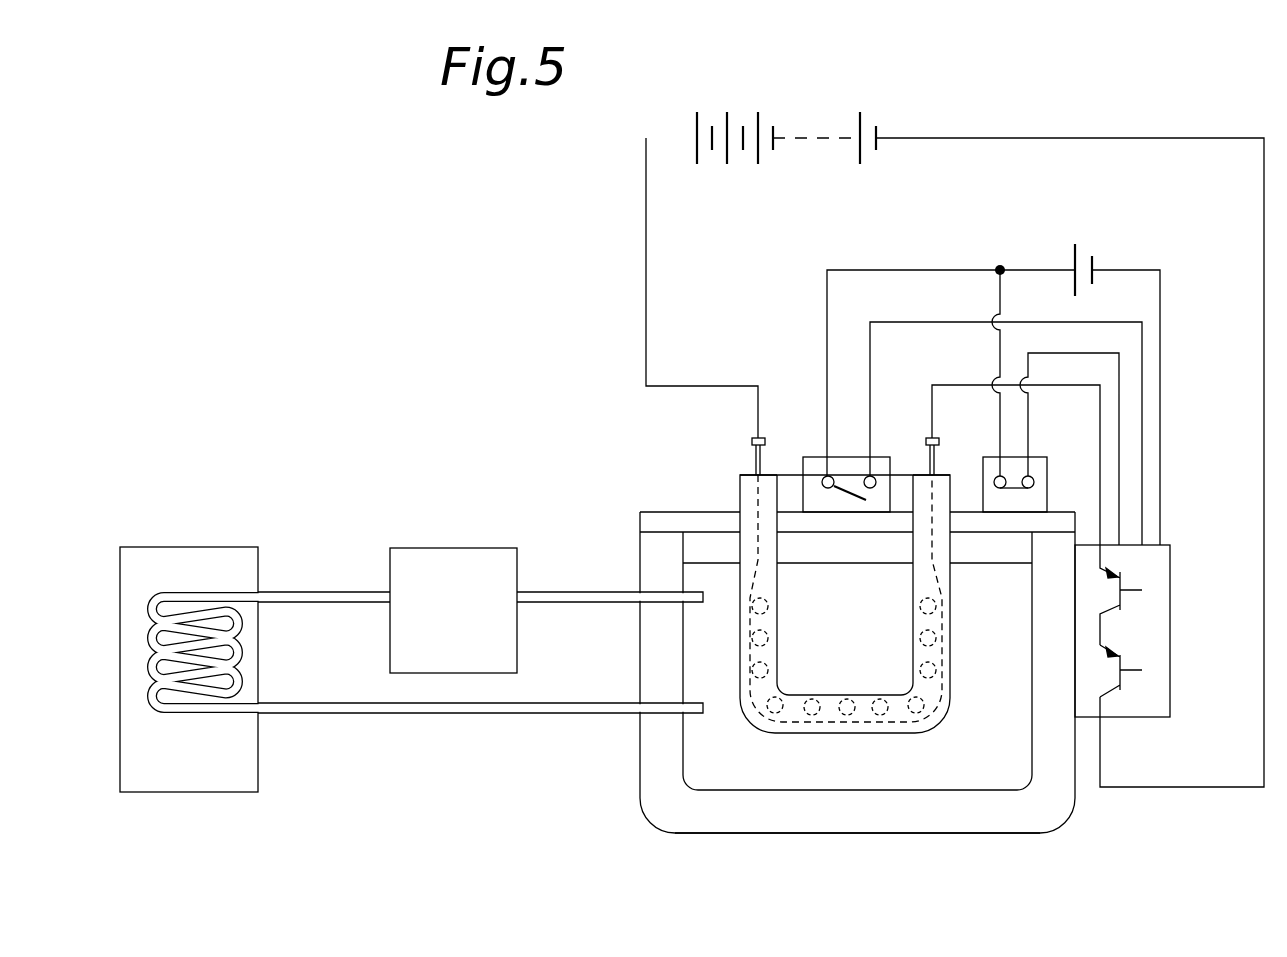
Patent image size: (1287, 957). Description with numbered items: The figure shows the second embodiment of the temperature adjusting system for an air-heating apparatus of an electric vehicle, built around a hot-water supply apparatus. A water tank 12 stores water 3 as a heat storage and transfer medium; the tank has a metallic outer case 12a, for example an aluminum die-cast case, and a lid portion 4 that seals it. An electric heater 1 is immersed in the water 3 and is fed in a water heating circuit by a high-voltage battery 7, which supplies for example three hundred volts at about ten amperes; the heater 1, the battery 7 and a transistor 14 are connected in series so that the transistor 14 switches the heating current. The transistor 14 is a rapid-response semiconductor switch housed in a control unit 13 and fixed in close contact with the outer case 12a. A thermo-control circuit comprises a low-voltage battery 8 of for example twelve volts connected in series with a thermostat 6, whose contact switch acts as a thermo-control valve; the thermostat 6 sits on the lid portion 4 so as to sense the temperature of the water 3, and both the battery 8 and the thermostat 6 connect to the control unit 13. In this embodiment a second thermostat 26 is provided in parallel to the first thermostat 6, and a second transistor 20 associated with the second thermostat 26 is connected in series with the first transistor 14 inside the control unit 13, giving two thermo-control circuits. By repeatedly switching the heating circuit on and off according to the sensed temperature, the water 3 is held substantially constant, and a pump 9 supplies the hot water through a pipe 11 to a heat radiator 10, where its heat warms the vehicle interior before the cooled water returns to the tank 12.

The electric heater 1 is at (740, 496).
The water 3 is at (733, 757).
The lid portion 4 is at (660, 512).
The thermostat 6 is at (805, 458).
The high-voltage battery 7 is at (697, 130).
The low-voltage battery 8 is at (1092, 264).
The pump 9 is at (458, 548).
The heat radiator 10 is at (190, 547).
The pipe 11 is at (565, 592).
The water tank 12 is at (767, 833).
The outer case 12a is at (870, 834).
The control unit 13 is at (1170, 663).
The transistor 14 is at (1120, 683).
The second transistor 20 is at (1130, 587).
The second thermostat 26 is at (1047, 486).